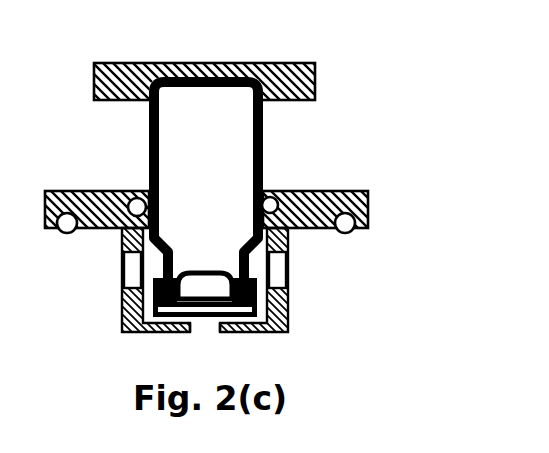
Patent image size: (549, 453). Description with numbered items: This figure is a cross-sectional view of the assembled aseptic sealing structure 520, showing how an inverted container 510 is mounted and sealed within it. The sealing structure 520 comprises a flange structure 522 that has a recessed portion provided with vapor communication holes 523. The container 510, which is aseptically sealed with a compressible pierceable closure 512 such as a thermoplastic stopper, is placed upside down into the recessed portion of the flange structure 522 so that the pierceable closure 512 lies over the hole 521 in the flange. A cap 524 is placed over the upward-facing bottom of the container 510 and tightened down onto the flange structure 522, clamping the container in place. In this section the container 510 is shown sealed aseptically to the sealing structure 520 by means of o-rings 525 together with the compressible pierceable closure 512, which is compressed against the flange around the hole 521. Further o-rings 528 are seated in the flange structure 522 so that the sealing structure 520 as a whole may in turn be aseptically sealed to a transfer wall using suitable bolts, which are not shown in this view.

The container 510 is at (202, 120).
The compressible pierceable closure 512 is at (243, 312).
The sealing structure 520 is at (372, 64).
The hole 521 is at (202, 328).
The flange structure 522 is at (107, 200).
The vapor communication holes 523 is at (277, 272).
The cap 524 is at (123, 88).
The o-rings 525 is at (268, 202).
The o-rings 528 is at (62, 232).